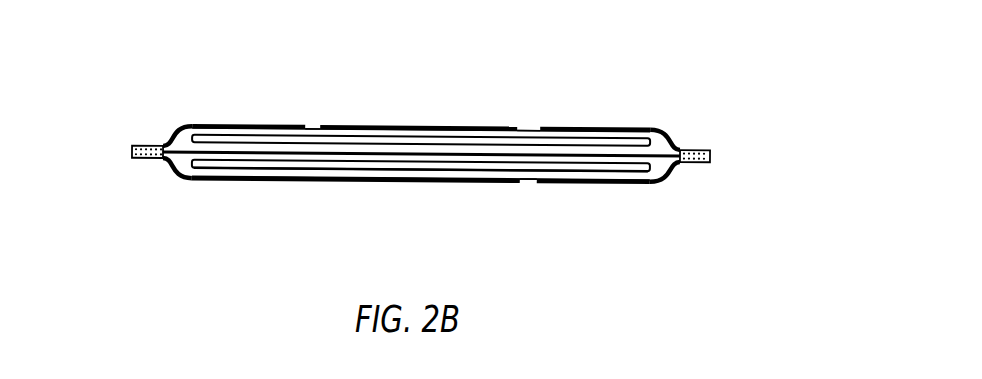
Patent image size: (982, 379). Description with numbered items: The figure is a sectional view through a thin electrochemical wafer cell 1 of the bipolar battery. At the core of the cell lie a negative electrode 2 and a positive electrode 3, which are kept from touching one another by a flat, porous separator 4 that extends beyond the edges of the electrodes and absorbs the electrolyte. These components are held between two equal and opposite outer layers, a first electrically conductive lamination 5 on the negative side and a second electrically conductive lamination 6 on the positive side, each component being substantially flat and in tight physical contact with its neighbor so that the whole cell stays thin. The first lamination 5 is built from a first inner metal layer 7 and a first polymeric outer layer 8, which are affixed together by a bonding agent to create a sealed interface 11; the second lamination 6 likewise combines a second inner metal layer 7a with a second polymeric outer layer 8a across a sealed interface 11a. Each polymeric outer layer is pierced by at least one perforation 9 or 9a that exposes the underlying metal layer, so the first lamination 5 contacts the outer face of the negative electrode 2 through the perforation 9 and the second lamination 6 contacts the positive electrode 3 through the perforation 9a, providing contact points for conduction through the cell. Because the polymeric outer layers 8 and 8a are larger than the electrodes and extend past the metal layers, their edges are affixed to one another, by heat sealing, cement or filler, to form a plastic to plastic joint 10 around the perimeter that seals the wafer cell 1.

The wafer cell 1 is at (779, 117).
The negative electrode 2 is at (483, 142).
The positive electrode 3 is at (340, 173).
The separator 4 is at (664, 150).
The first electrically conductive lamination 5 is at (230, 181).
The second electrically conductive lamination 6 is at (233, 126).
The first inner metal layer 7 is at (530, 180).
The second inner metal layer 7a is at (320, 126).
The first polymeric outer layer 8 is at (622, 182).
The second polymeric outer layer 8a is at (382, 126).
The perforation 9 is at (308, 185).
The perforation 9a is at (312, 126).
The plastic to plastic joint 10 is at (145, 147).
The sealed interface 11 is at (403, 180).
The sealed interface 11a is at (436, 126).